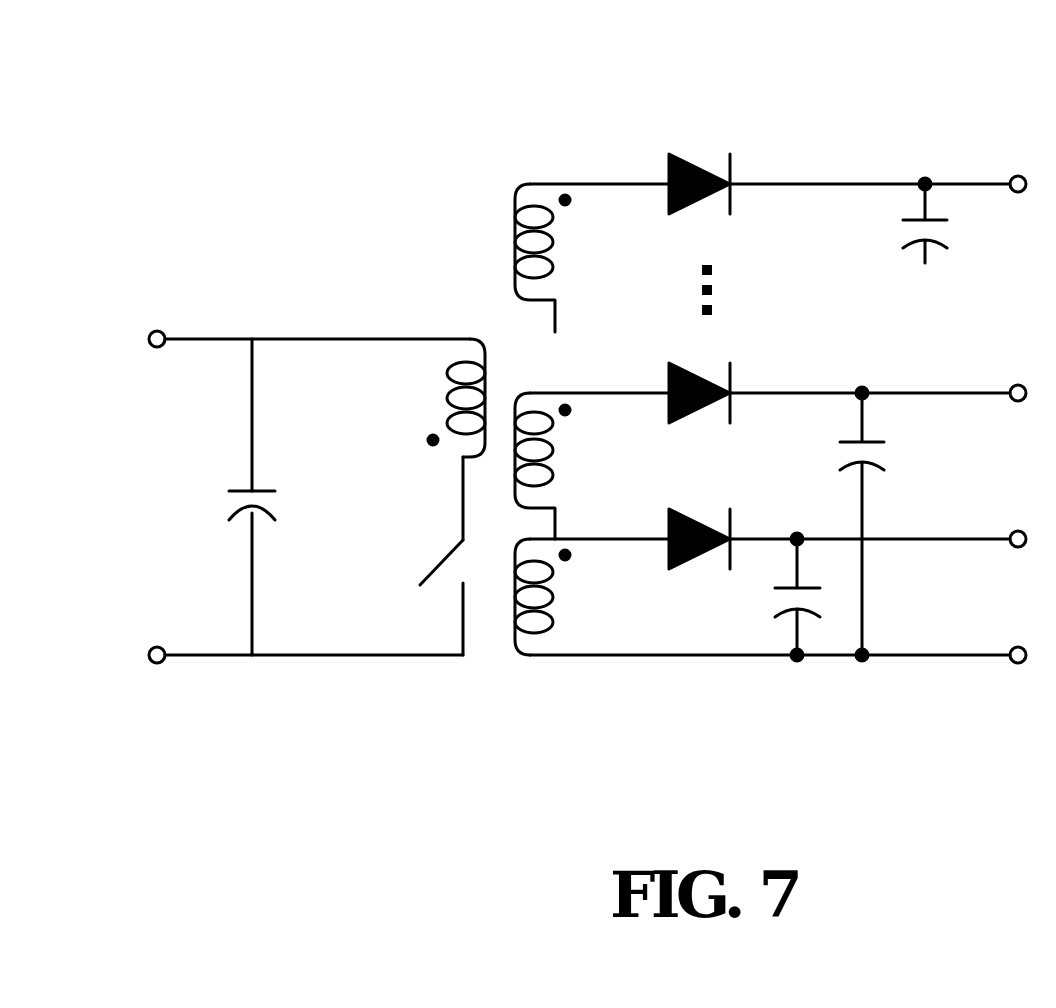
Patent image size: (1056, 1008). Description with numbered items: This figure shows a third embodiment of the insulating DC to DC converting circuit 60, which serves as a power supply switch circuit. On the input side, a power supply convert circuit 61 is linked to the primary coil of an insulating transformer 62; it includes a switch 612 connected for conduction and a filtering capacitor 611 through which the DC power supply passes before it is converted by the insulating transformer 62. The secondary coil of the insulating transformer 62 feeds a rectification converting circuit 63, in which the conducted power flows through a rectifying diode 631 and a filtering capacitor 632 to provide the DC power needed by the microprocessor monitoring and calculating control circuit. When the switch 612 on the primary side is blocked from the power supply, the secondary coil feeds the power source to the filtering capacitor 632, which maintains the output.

The power conversion circuit 60 is at (312, 110).
The power supply convert circuit 61 is at (320, 330).
The filtering capacitor 611 is at (233, 478).
The switch 612 is at (425, 560).
The insulating transformer 62 is at (493, 328).
The rectification converting circuit 63 is at (802, 165).
The rectifying diode 631 is at (683, 505).
The filtering capacitor 632 is at (772, 598).